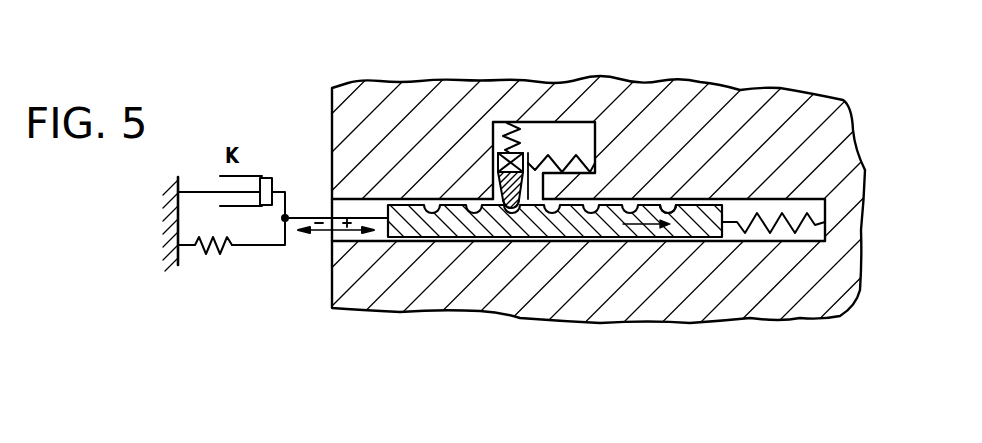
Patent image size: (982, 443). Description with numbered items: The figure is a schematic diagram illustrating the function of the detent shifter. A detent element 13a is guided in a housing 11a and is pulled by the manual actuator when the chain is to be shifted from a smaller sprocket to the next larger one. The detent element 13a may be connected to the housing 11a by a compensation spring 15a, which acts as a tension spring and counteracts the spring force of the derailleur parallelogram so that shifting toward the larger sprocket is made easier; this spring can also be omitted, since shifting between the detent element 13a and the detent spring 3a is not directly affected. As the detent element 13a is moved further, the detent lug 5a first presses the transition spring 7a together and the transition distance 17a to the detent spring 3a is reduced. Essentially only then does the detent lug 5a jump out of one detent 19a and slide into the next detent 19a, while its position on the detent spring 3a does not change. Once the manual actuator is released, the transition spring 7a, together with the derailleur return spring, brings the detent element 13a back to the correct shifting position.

The housing 11a is at (388, 108).
The detent element 13a is at (643, 212).
The detent 19a is at (671, 206).
The detent lug 5a is at (498, 187).
The transition distance 17a is at (528, 203).
The detent spring 3a is at (516, 123).
The transition spring 7a is at (553, 160).
The compensation spring 15a is at (767, 207).